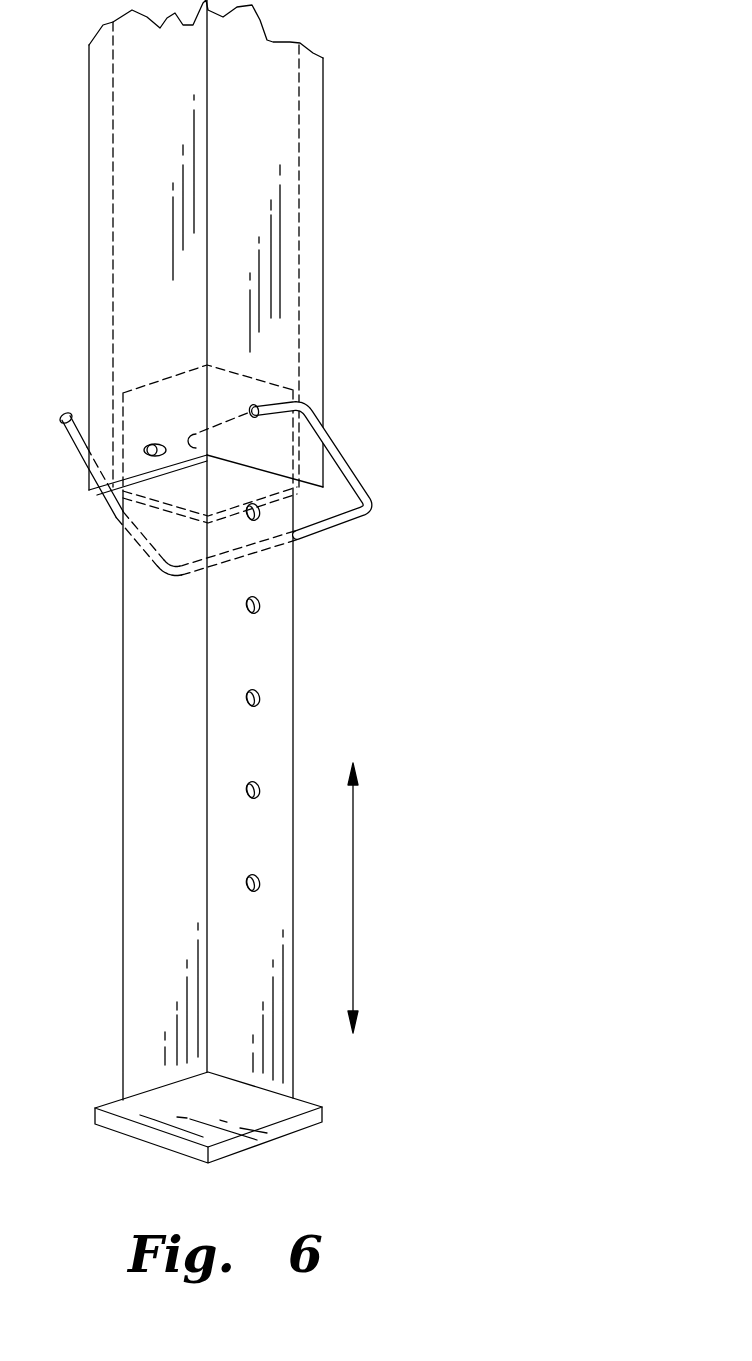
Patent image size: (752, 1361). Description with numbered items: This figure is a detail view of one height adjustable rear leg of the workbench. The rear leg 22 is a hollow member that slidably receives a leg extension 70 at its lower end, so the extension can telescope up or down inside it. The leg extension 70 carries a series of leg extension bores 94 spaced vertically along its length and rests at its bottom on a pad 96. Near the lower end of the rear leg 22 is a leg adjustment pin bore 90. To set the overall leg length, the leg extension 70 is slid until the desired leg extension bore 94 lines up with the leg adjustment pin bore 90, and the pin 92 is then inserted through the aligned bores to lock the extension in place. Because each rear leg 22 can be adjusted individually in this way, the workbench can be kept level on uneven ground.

The rear leg 22 is at (315, 195).
The leg extension 70 is at (143, 910).
The leg adjustment pin bore 90 is at (260, 403).
The pin 92 is at (367, 497).
The leg extension bore 94 is at (262, 508).
The pad 96 is at (307, 1132).